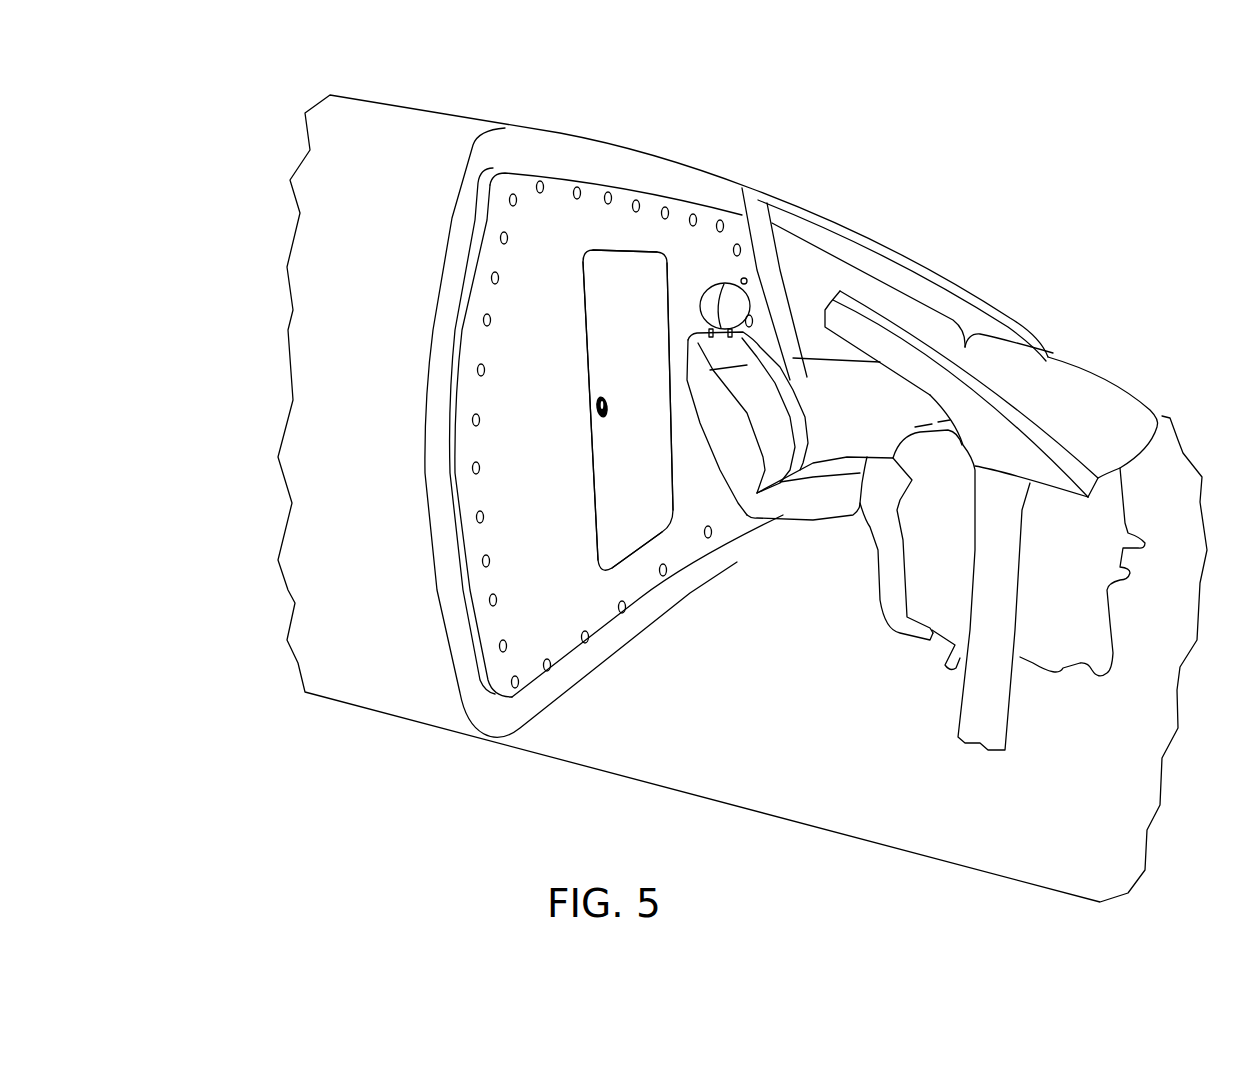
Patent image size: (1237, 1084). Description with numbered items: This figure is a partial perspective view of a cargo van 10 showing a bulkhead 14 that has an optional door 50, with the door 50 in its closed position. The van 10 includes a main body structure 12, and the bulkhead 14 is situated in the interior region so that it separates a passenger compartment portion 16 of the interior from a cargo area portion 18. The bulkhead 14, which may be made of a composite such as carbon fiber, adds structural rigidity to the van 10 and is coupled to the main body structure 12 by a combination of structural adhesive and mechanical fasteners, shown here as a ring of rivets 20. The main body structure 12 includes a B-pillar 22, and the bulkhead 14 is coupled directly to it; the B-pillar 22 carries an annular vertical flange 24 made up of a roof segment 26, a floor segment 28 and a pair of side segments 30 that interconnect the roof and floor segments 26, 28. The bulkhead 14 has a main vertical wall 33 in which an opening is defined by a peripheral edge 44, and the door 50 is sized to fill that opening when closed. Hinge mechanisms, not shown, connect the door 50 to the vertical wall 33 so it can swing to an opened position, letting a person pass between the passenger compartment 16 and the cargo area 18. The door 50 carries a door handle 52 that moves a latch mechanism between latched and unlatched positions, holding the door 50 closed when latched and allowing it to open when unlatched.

The cargo van 10 is at (967, 165).
The main body structure 12 is at (965, 275).
The bulkhead 14 is at (672, 240).
The passenger compartment portion 16 is at (623, 753).
The cargo area portion 18 is at (278, 400).
The rivets 20 is at (724, 220).
The B-pillar 22 is at (490, 160).
The annular vertical flange 24 is at (418, 478).
The roof segment 26 is at (612, 146).
The floor segment 28 is at (716, 563).
The side segments 30 is at (775, 290).
The main vertical wall 33 is at (603, 243).
The peripheral edge 44 is at (632, 256).
The door 50 is at (620, 453).
The door handle 52 is at (595, 406).